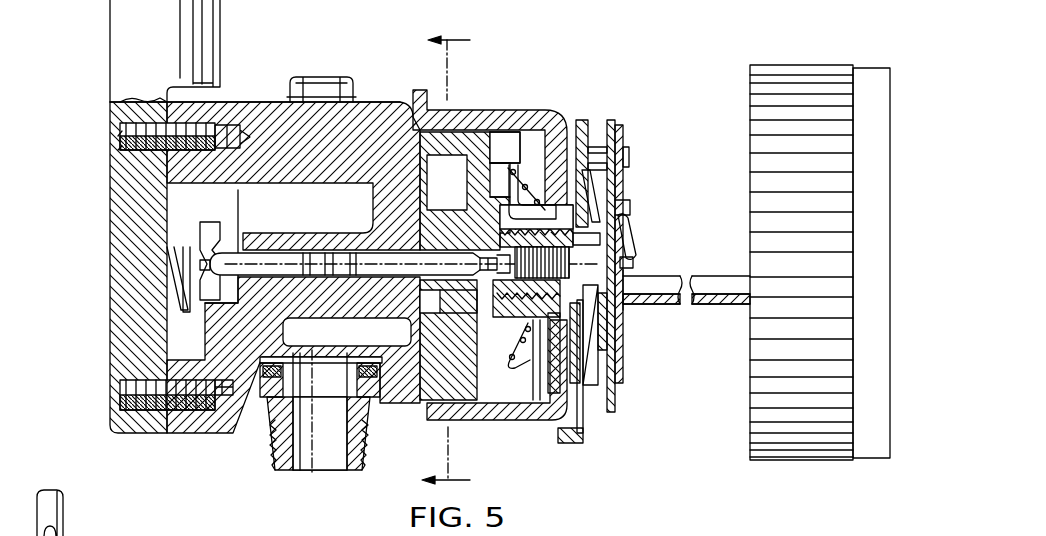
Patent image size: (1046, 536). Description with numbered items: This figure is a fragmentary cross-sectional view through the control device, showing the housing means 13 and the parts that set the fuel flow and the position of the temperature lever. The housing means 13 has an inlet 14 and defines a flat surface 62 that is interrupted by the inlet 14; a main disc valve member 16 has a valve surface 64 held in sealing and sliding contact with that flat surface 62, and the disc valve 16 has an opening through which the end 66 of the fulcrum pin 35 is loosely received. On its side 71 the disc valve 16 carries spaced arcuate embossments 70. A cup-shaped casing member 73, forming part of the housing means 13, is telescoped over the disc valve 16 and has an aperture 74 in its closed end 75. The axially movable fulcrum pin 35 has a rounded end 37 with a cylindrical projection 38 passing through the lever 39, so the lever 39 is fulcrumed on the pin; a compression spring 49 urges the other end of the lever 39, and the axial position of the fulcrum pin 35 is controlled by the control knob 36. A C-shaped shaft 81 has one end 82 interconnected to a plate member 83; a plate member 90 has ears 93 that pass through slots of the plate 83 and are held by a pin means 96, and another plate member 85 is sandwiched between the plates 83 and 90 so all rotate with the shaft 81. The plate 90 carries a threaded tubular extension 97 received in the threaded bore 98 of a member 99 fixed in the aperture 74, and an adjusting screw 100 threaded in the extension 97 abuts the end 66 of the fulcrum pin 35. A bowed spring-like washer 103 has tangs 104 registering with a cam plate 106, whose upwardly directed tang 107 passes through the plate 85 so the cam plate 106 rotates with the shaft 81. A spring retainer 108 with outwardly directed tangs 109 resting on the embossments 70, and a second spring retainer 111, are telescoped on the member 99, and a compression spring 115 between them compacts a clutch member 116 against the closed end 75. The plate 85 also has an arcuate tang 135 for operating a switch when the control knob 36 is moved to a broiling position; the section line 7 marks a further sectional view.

The housing means 13 is at (250, 100).
The section line 7- 7 is at (440, 260).
The valve surface 64 is at (406, 100).
The main disc valve member 16 is at (457, 118).
The cup-shaped casing member 73 is at (498, 125).
The arcuate abutments or embossments 70 is at (505, 130).
The outwardly directed tangs 109 is at (522, 135).
The member 99 is at (540, 150).
The closed end 75 is at (568, 150).
The tangs 104 is at (600, 148).
The plate member 85 is at (612, 165).
The plate member 83 is at (622, 168).
The upwardly directed tang 107 is at (628, 172).
The bowed spring-like washer 103 is at (600, 190).
The plate member 90 is at (630, 210).
The adjusting screw 100 is at (580, 242).
The pin means 96 is at (632, 245).
The ears 93 is at (635, 265).
The C-shaped shaft 81 is at (670, 305).
The end 82 is at (626, 306).
The cam plate 106 is at (586, 367).
The arcuate tang 135 is at (585, 438).
The clutch member 116 is at (557, 420).
The spring retainer 111 is at (533, 420).
The spring retainer 108 is at (530, 382).
The compression spring 115 is at (522, 362).
The side 71 is at (492, 405).
The inlet 14 is at (403, 382).
The threaded bore 98 is at (477, 330).
The tubular extension 97 is at (476, 312).
The flat surface 62 is at (426, 323).
The end 66 is at (432, 248).
The fulcrum pin 35 is at (362, 250).
The rounded end 37 is at (248, 240).
The lever 39 is at (188, 232).
The cylindrical projection 38 is at (200, 252).
The compression spring 49 is at (178, 280).
The aperture 74 is at (533, 259).
The control knob 36 is at (792, 65).